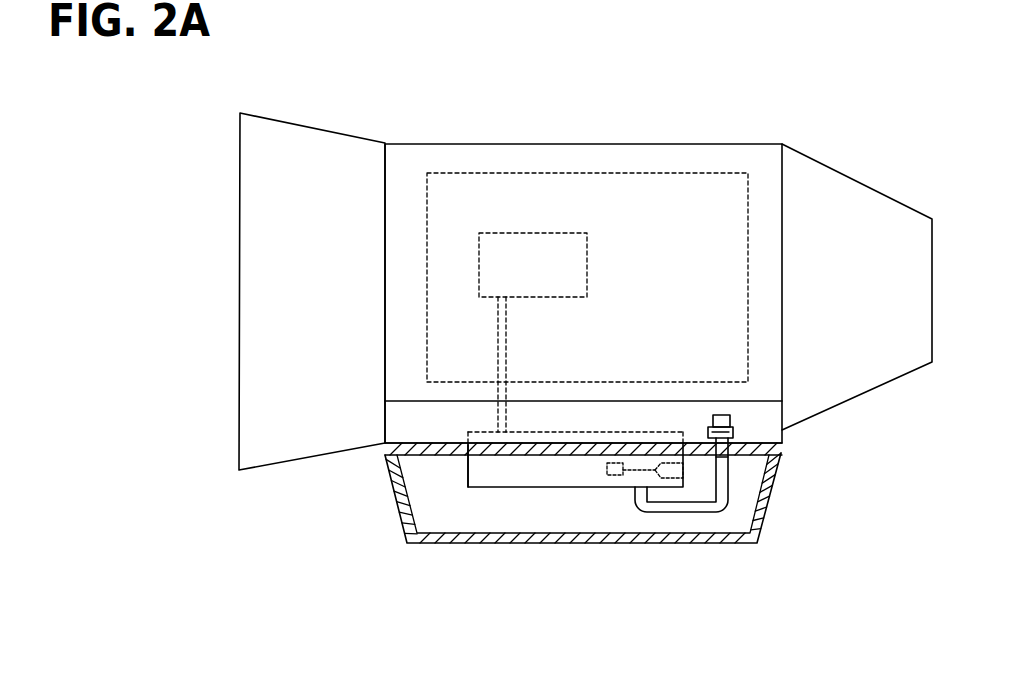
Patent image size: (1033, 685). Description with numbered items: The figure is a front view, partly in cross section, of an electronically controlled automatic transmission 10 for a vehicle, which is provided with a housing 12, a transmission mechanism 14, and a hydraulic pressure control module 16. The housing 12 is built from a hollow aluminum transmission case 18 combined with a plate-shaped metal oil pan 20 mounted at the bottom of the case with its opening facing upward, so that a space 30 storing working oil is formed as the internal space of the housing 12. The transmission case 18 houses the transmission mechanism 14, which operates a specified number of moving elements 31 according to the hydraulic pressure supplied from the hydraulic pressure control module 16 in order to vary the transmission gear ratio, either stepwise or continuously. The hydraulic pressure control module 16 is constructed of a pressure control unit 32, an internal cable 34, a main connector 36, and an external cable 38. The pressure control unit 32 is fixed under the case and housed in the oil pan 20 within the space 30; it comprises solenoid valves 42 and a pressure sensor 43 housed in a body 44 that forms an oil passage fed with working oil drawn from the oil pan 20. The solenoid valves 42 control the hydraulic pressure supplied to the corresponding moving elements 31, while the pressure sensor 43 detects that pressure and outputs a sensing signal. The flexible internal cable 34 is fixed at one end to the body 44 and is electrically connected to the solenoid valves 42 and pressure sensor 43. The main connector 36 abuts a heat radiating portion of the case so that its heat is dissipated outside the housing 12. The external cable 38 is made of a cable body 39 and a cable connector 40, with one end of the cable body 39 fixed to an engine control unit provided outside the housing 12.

The automatic transmission 10 is at (330, 108).
The housing 12 is at (643, 493).
The transmission mechanism 14 is at (557, 185).
The hydraulic pressure control module 16 is at (460, 497).
The transmission case 18 is at (780, 449).
The oil pan 20 is at (763, 497).
The space 30 is at (509, 510).
The moving elements 31 is at (502, 243).
The pressure control unit 32 is at (584, 542).
The internal cable 34 is at (724, 514).
The main connector 36 is at (829, 381).
The external cable 38 is at (829, 427).
The cable body 39 is at (733, 419).
The cable connector 40 is at (735, 433).
The solenoid valves 42 is at (688, 477).
The pressure sensor 43 is at (615, 475).
The body 44 is at (572, 478).